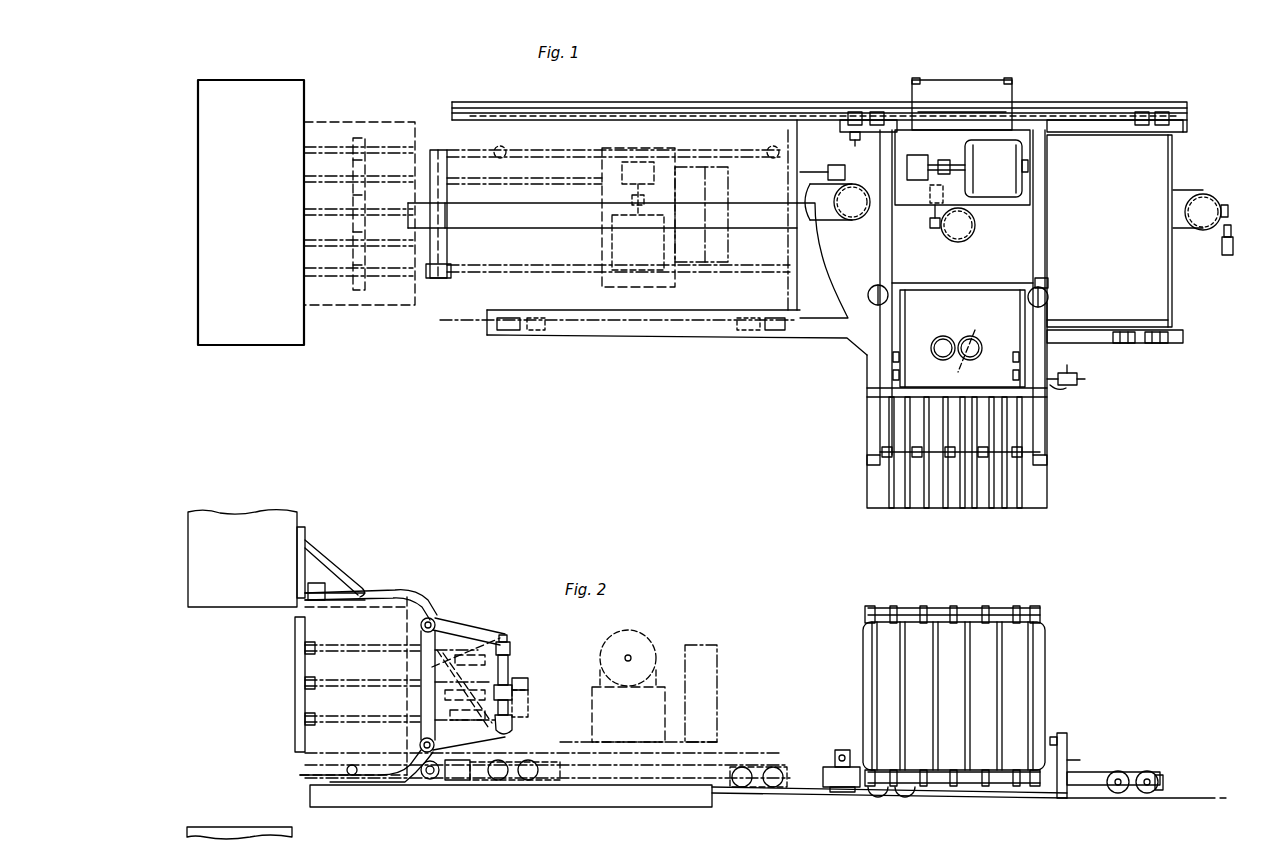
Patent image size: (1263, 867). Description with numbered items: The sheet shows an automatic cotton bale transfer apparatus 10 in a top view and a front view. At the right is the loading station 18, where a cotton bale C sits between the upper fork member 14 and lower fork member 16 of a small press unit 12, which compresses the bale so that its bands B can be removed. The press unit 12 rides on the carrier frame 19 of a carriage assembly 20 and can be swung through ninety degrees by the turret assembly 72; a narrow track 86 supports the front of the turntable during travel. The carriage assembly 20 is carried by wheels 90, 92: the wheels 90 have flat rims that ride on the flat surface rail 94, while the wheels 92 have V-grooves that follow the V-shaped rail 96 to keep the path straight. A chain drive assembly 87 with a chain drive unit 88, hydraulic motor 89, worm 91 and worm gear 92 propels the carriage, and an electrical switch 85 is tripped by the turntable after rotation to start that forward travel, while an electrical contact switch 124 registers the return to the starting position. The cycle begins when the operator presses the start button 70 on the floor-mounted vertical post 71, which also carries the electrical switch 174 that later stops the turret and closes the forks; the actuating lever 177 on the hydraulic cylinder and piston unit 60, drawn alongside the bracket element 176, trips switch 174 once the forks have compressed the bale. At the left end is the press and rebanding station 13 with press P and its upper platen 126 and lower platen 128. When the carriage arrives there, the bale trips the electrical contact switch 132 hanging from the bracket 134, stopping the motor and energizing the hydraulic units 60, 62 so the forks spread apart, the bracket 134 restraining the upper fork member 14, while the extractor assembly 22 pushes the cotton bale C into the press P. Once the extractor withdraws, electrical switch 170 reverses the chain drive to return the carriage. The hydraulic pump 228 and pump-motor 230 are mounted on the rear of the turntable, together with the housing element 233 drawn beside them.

In FIG. 1, the cotton bale transfer apparatus 10 is at (687, 358).
In FIG. 2, the cotton bale transfer apparatus 10 is at (750, 658).
In FIG. 1, the press unit 12 is at (492, 278).
In FIG. 2, the press unit 12 is at (440, 612).
In FIG. 1, the press and rebanding station 13 is at (328, 107).
In FIG. 2, the press and rebanding station 13 is at (250, 687).
In FIG. 1, the upper fork member 14 is at (440, 140).
In FIG. 2, the upper fork member 14 is at (400, 588).
In FIG. 2, the lower fork member 16 is at (318, 770).
In FIG. 1, the loading station 18 is at (1065, 480).
In FIG. 2, the loading station 18 is at (1068, 662).
In FIG. 1, the carrier frame 19 is at (1148, 160).
In FIG. 2, the carrier frame 19 is at (1102, 772).
In FIG. 1, the carriage assembly 20 is at (1080, 130).
In FIG. 2, the carriage assembly 20 is at (1150, 766).
In FIG. 1, the extractor assembly 22 is at (430, 277).
In FIG. 2, the extractor assembly 22 is at (290, 700).
In FIG. 1, the hydraulic cylinder and piston unit 60 is at (1050, 297).
In FIG. 2, the hydraulic cylinder and piston unit 60 is at (513, 660).
In FIG. 1, the hydraulic cylinder and piston unit 62 is at (873, 290).
In FIG. 1, the start button 70 is at (1085, 380).
In FIG. 2, the start button 70 is at (1068, 745).
In FIG. 1, the vertical post 71 is at (1068, 370).
In FIG. 2, the vertical post 71 is at (1068, 762).
In FIG. 1, the turret assembly 72 is at (946, 240).
In FIG. 1, the electrical switch 85 is at (848, 138).
In FIG. 2, the electrical switch 85 is at (842, 750).
In FIG. 1, the narrow track 86 is at (772, 207).
In FIG. 1, the chain drive assembly 87 is at (1207, 247).
In FIG. 1, the chain drive unit 88 is at (862, 229).
In FIG. 1, the hydraulic motor 89 is at (1236, 245).
In FIG. 1, the wheels 90 is at (1130, 345).
In FIG. 2, the wheels 90 is at (878, 795).
In FIG. 1, the worm 91 is at (1230, 210).
In FIG. 1, the wheels 92 is at (882, 112).
In FIG. 2, the wheels 92 is at (841, 793).
In FIG. 2, the flat surface rail 94 is at (752, 792).
In FIG. 1, the V-shaped rail 96 is at (1045, 118).
In FIG. 1, the electrical contact switch 124 is at (826, 170).
In FIG. 2, the electrical contact switch 124 is at (826, 772).
In FIG. 2, the upper platen 126 is at (228, 520).
In FIG. 2, the lower platen 128 is at (222, 827).
In FIG. 2, the electrical contact switch 132 is at (306, 590).
In FIG. 2, the bracket 134 is at (343, 570).
In FIG. 1, the electrical switch 170 is at (962, 335).
In FIG. 2, the electrical switch 170 is at (455, 640).
In FIG. 1, the electrical switch 174 is at (1079, 395).
In FIG. 2, the electrical switch 174 is at (1050, 737).
In FIG. 1, the cylinder bracket 176 is at (1050, 283).
In FIG. 2, the cylinder bracket 176 is at (530, 680).
In FIG. 2, the actuating lever 177 is at (530, 705).
In FIG. 1, the pump 228 is at (918, 157).
In FIG. 1, the pump-motor 230 is at (1008, 170).
In FIG. 2, the pump-motor 230 is at (645, 635).
In FIG. 1, the drive housing 233 is at (960, 135).
In FIG. 2, the drive housing 233 is at (642, 722).
In FIG. 1, the bands B is at (930, 510).
In FIG. 2, the bands B is at (878, 657).
In FIG. 1, the cotton bale C is at (862, 482).
In FIG. 2, the cotton bale C is at (1050, 692).
In FIG. 1, the press P is at (252, 194).